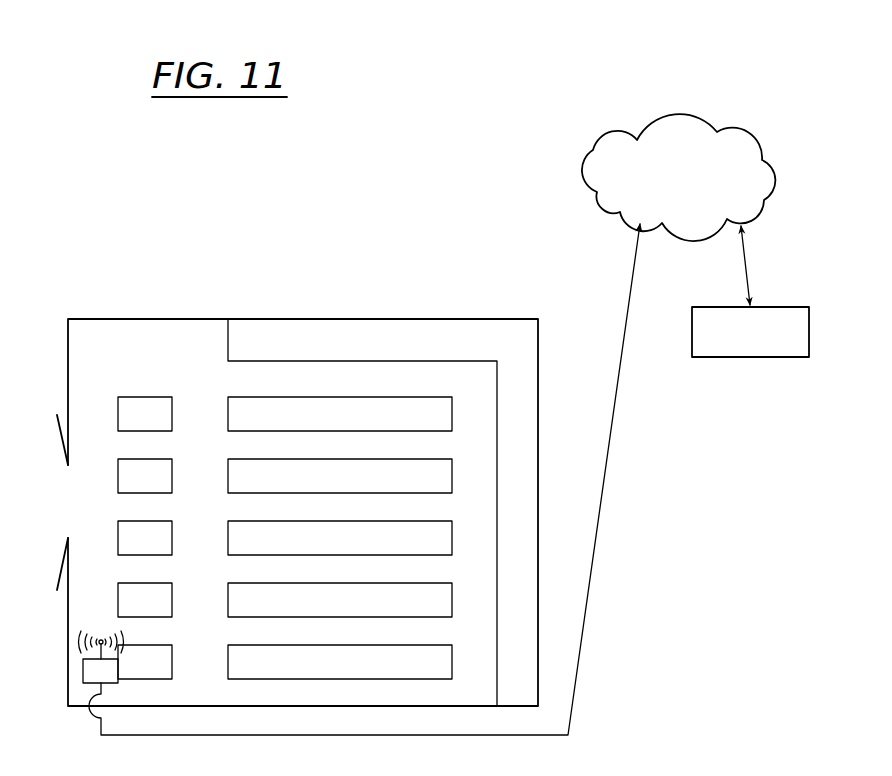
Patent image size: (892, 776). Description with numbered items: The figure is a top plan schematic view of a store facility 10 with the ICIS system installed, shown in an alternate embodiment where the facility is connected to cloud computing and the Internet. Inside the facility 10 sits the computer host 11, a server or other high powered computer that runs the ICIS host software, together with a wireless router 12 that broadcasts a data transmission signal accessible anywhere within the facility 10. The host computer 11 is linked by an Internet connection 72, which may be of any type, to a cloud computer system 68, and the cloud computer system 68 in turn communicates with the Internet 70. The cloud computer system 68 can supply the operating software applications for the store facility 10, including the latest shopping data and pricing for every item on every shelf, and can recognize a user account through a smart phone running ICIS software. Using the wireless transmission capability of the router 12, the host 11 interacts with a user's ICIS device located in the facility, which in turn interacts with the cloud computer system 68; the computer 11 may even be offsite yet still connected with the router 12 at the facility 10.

The facility 10 is at (441, 94).
The computer host 11 is at (83, 670).
The wireless router 12 is at (70, 636).
The cloud computer system 68 is at (612, 140).
The Internet 70 is at (786, 306).
The Internet connection 72 is at (595, 545).